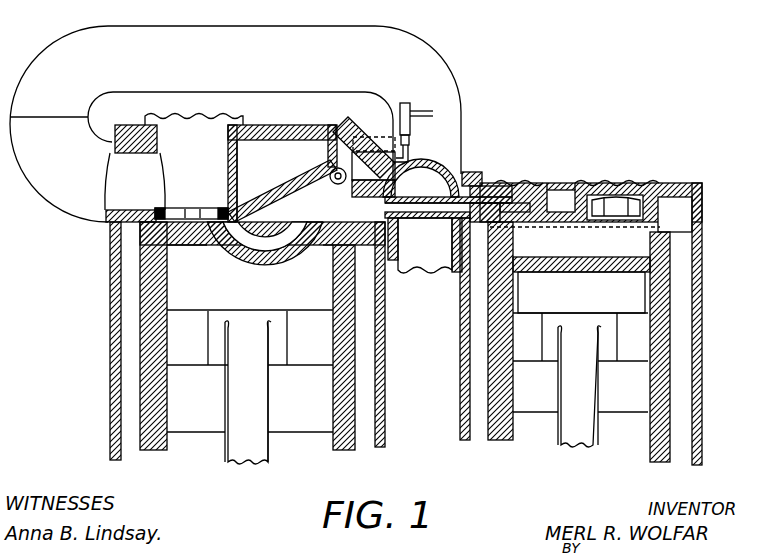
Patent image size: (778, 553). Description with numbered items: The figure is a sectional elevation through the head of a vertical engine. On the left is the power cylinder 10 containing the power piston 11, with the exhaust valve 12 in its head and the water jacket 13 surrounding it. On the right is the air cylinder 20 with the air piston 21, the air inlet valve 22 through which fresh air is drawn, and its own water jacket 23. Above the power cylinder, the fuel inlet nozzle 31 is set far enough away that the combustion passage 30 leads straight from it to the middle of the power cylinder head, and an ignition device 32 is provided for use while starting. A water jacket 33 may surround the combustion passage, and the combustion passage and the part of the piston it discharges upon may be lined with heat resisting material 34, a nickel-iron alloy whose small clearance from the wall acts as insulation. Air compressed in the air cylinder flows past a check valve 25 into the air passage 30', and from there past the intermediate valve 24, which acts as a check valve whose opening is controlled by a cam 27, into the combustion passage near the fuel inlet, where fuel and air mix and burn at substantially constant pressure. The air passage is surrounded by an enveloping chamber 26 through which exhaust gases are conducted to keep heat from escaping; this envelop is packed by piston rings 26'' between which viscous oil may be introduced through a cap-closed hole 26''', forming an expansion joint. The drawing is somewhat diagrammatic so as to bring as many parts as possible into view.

The power cylinder 10 is at (150, 446).
The power piston 11 is at (165, 383).
The exhaust valve 12 is at (180, 210).
The water jacket 13 is at (125, 343).
The air cylinder 20 is at (500, 430).
The air piston 21 is at (508, 380).
The air inlet valve 22 is at (617, 197).
The water jacket 23 is at (697, 318).
The intermediate valve 24 is at (320, 246).
The check valve 25 is at (556, 186).
The enveloping chamber 26 is at (447, 188).
The piston rings 26'' is at (448, 252).
The cap-closed hole 26''' is at (491, 157).
The cam 27 is at (404, 103).
The combustion passage 30 is at (282, 191).
The air passage 30' is at (466, 203).
The fuel inlet nozzle 31 is at (320, 165).
The ignition device 32 is at (333, 170).
The water jacket 33 is at (282, 173).
The heat resisting material 34 is at (244, 204).